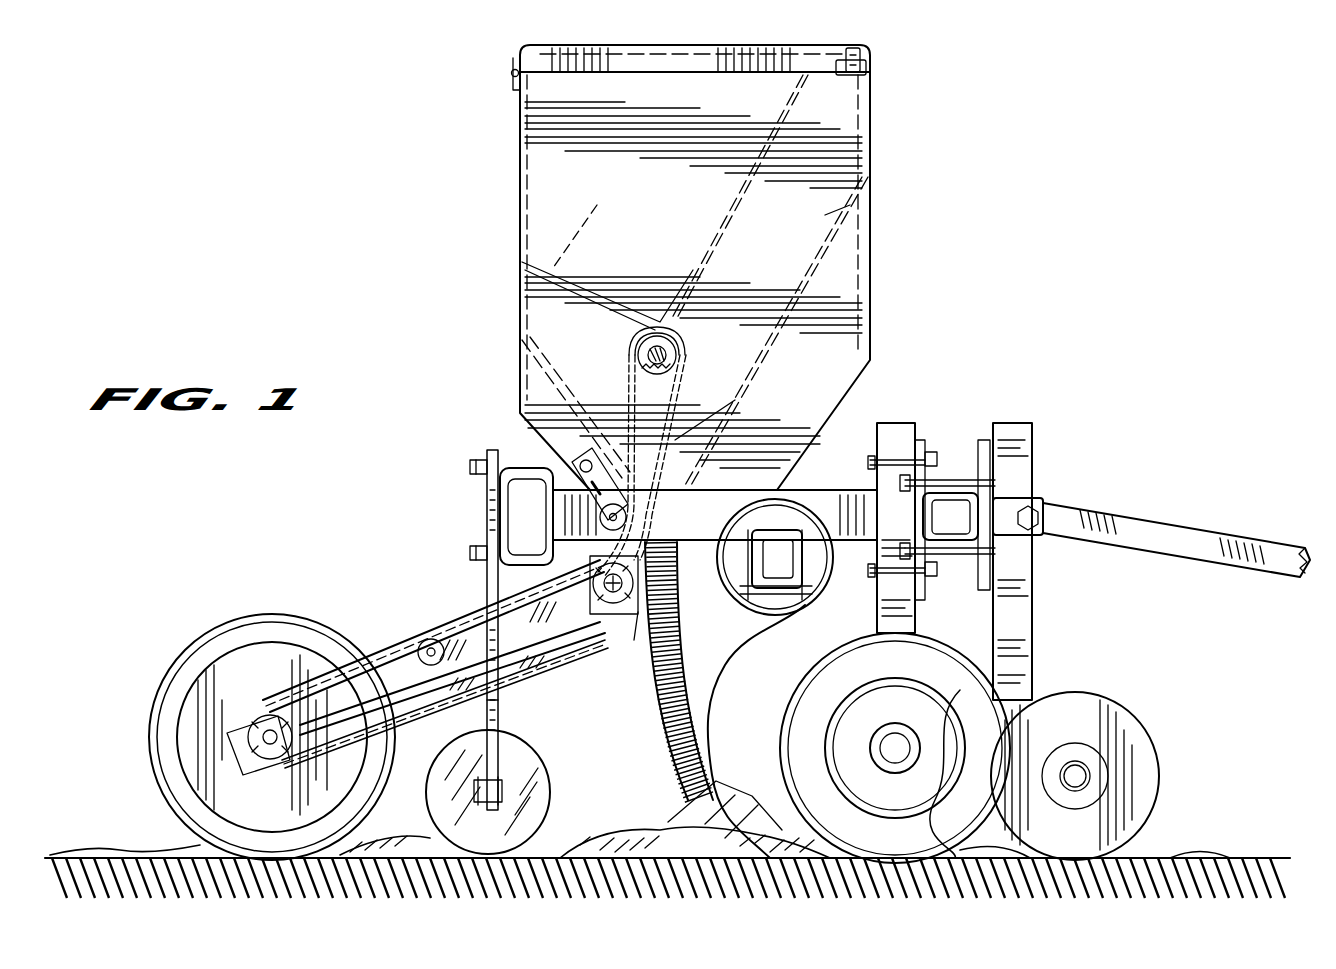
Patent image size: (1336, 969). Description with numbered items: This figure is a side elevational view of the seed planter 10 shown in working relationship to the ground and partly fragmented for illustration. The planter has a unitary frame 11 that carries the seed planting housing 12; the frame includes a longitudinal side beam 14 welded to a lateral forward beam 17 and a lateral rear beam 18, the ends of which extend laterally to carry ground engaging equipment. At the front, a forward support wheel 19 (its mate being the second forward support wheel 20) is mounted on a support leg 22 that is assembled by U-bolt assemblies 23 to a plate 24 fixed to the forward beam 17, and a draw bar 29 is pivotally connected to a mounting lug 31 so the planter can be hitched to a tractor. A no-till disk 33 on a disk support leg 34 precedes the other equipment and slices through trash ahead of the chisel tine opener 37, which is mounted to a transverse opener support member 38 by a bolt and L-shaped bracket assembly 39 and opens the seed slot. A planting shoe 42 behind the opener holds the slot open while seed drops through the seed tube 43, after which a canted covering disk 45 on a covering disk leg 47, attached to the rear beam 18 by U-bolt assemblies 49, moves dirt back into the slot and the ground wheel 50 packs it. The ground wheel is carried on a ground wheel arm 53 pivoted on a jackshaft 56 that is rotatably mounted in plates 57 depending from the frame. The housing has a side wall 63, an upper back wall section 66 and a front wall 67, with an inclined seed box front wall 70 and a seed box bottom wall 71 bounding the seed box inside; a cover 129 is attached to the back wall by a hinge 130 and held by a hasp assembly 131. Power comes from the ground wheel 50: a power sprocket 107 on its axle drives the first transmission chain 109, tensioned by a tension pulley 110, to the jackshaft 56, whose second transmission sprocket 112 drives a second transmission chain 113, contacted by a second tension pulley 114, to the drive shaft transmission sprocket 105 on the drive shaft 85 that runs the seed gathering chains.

The seed planter 10 is at (968, 178).
The unitary frame 11 is at (520, 497).
The seed planting housing 12 is at (878, 269).
The first longitudinal side beam 14 is at (818, 500).
The lateral forward beam 17 is at (1002, 490).
The lateral rear beam 18 is at (495, 535).
The first forward support wheel 19 is at (802, 711).
The second forward support wheel 20 is at (965, 690).
The support leg 22 is at (890, 422).
The U-bolt assemblies 23 is at (937, 450).
The plate 24 is at (922, 440).
The first draw bar 29 is at (1196, 537).
The mounting lug 31 is at (1040, 540).
The no-till disk 33 is at (1150, 780).
The disk support leg 34 is at (1018, 632).
The chisel tine opener 37 is at (760, 640).
The transverse opener support member 38 is at (760, 557).
The bolt and L-shaped bracket assembly 39 is at (798, 590).
The planting shoe 42 is at (700, 810).
The seed tube 43 is at (668, 742).
The covering disk 45 is at (546, 778).
The covering disk leg 47 is at (500, 700).
The U-bolt assemblies 49 is at (480, 468).
The ground wheel 50 is at (256, 615).
The first ground wheel arm 53 is at (402, 645).
The jackshaft 56 is at (613, 606).
The plates 57 is at (634, 640).
The first lateral side wall 63 is at (848, 343).
The upper back wall section 66 is at (520, 182).
The front wall 67 is at (840, 219).
The seed box front wall 70 is at (730, 206).
The seed box bottom wall 71 is at (607, 334).
The drive shaft 85 is at (650, 352).
The drive shaft transmission sprocket 105 is at (672, 355).
The power sprocket 107 is at (264, 743).
The first transmission chain 109 is at (462, 692).
The tension pulley 110 is at (430, 640).
The second transmission sprocket 112 is at (586, 632).
The second transmission chain 113 is at (735, 400).
The second tension pulley 114 is at (626, 516).
The cover 129 is at (535, 61).
The hinge 130 is at (512, 76).
The hasp assembly 131 is at (858, 82).